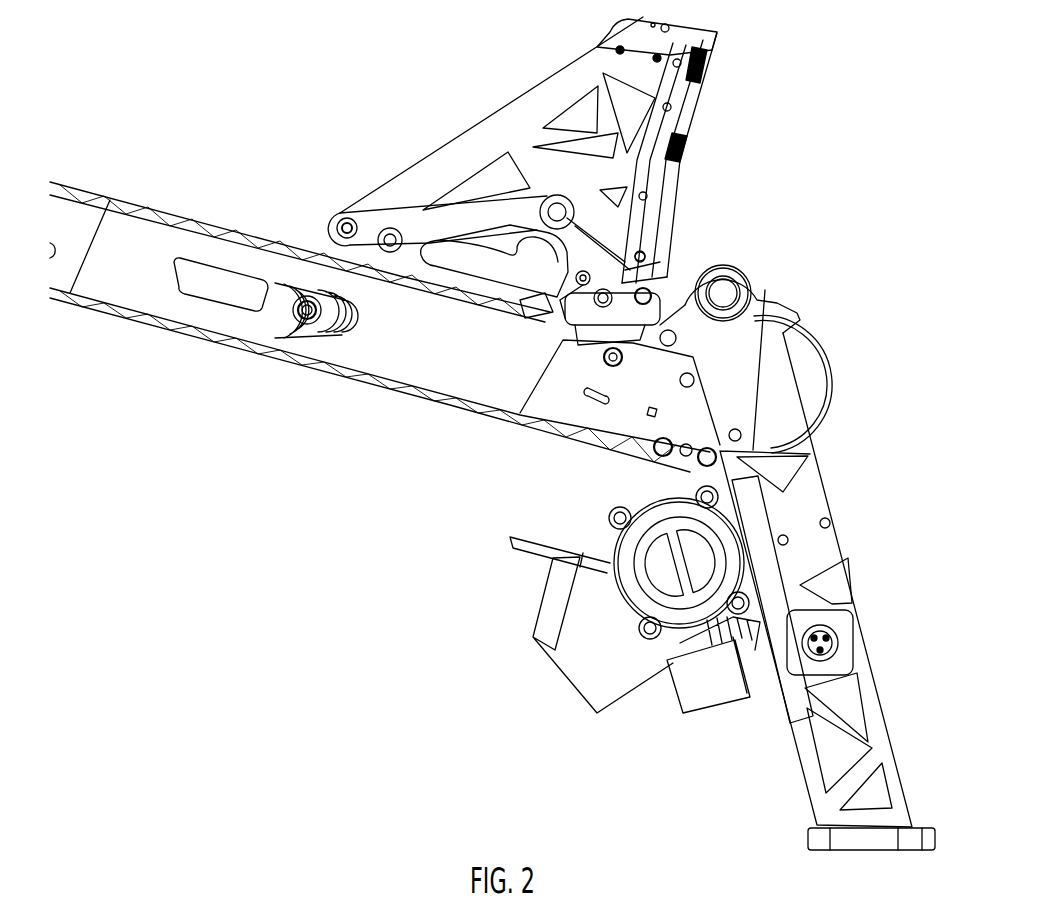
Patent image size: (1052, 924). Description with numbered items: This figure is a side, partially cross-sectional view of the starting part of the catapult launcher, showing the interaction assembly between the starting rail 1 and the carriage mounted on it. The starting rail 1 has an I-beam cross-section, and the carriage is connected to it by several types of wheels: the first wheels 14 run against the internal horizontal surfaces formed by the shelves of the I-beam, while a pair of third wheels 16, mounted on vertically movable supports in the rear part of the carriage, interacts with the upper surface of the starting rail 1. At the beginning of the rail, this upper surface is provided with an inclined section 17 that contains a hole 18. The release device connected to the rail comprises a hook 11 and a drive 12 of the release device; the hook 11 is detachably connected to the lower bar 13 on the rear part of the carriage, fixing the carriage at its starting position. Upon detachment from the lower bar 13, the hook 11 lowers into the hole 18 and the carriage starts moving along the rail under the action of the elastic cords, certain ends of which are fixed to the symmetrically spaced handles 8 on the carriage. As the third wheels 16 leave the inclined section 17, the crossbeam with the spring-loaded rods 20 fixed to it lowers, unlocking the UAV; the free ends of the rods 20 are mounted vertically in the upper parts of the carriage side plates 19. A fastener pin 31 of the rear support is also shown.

The starting rail 1 is at (213, 223).
The handle of the carriage for fixing the cords 8 is at (347, 205).
The hook of the release device 11 is at (572, 310).
The drive of the release device 12 is at (763, 650).
The lower bar of the carriage 13 is at (640, 253).
The first wheels of the carriage 14 is at (286, 320).
The third wheels of the carriage 16 is at (680, 290).
The inclined section of the starting rail 17 is at (565, 286).
The hole for the crank of the hook of the release device 18 is at (577, 337).
The carriage side plates 19 is at (460, 170).
The rod 20 is at (717, 30).
The fastener pin of the rear support 31 is at (738, 430).